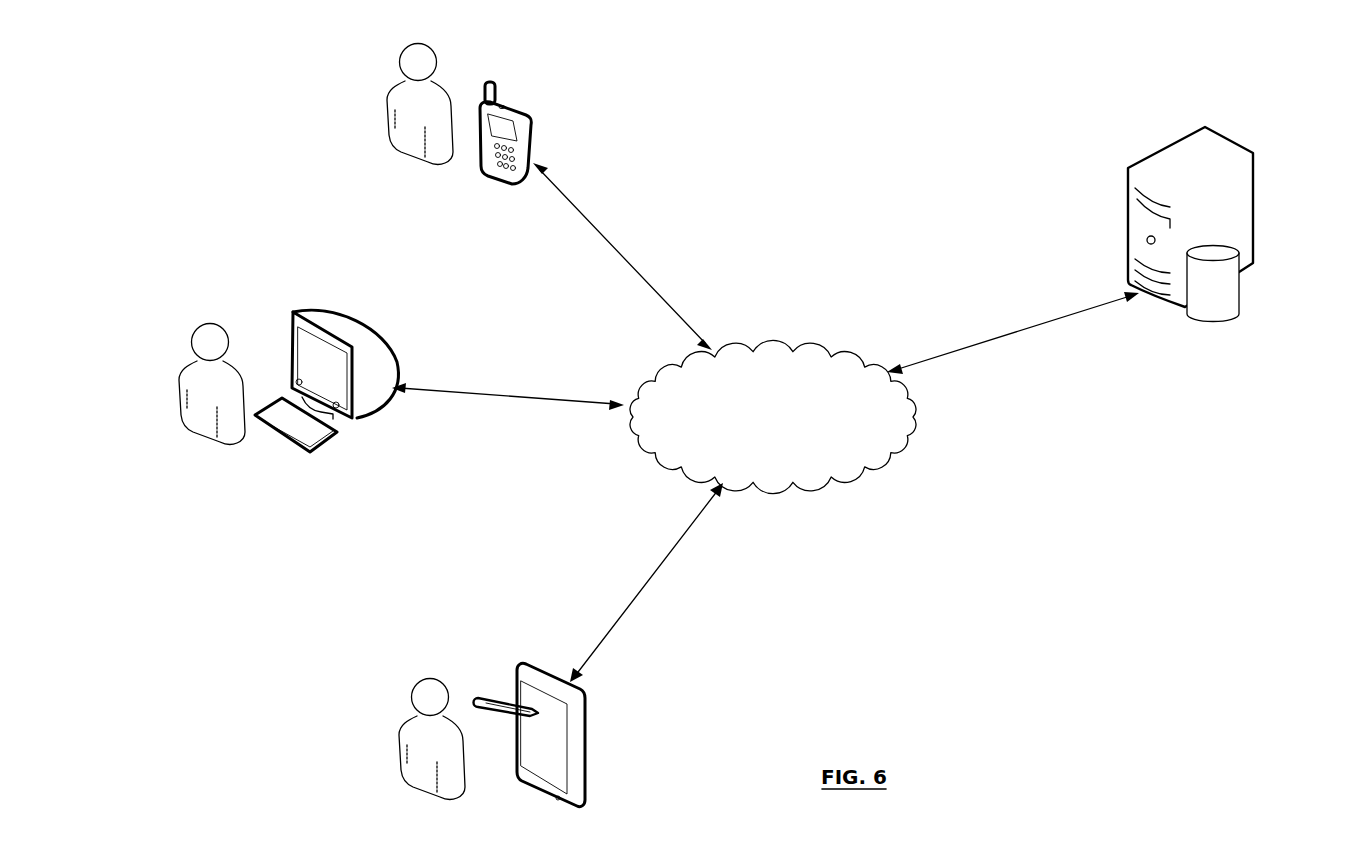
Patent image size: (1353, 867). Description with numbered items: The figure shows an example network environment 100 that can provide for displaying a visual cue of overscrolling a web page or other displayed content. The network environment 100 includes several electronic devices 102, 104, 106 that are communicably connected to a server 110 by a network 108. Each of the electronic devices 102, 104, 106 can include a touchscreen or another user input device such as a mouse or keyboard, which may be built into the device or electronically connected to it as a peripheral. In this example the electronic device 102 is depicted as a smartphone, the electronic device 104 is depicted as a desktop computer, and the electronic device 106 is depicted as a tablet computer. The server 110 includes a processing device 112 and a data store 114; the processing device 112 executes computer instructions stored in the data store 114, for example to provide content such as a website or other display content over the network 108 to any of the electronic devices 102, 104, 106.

The network environment 100 is at (896, 90).
The electronic device 102 is at (517, 103).
The electronic device 104 is at (365, 323).
The electronic device 106 is at (525, 664).
The network 108 is at (773, 348).
The server 110 is at (1131, 328).
The processing device 112 is at (1229, 135).
The data store 114 is at (1198, 323).